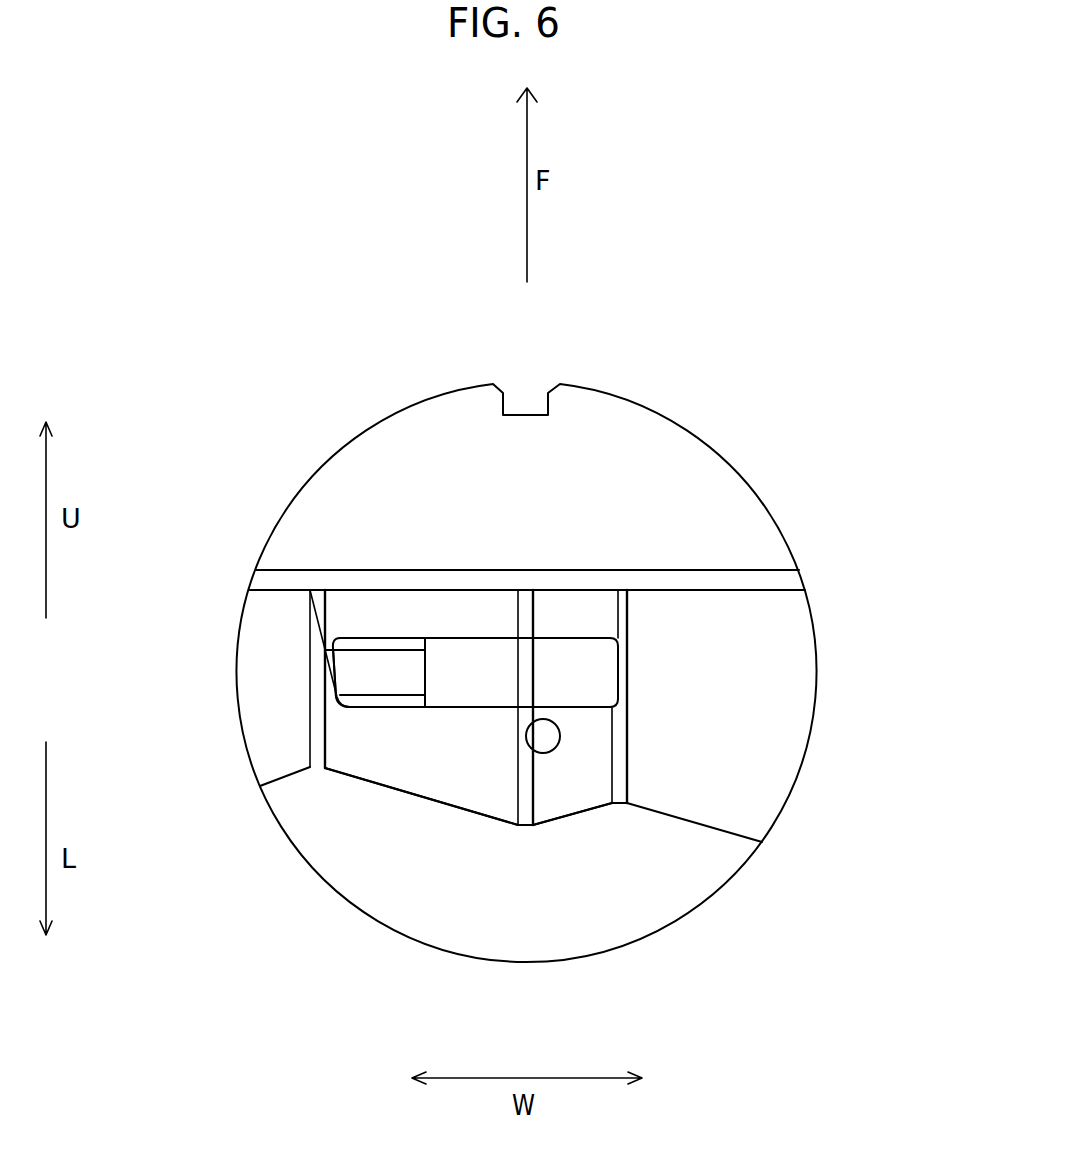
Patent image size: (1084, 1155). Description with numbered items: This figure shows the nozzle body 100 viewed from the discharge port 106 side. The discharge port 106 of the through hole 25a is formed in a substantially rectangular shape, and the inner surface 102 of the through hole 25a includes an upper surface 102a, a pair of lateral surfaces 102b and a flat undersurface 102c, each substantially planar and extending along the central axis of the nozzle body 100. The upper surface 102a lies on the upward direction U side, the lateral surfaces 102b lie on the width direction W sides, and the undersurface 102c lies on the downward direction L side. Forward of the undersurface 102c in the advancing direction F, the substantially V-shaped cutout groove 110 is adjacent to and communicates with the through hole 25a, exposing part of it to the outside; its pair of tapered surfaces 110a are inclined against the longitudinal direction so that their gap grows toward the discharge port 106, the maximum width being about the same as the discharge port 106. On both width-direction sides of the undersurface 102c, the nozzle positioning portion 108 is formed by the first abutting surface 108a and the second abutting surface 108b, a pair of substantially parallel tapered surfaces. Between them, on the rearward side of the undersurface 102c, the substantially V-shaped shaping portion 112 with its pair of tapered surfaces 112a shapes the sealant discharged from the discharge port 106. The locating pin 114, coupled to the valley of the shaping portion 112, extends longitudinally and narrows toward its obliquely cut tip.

The nozzle body 100 is at (199, 294).
The inner surface 102 is at (425, 697).
The upper surface 102a is at (571, 641).
The lateral surfaces 102b is at (426, 673).
The undersurface 102c is at (483, 704).
The through hole 25a is at (513, 668).
The discharge port 106 is at (511, 706).
The nozzle positioning portion 108 is at (620, 768).
The first abutting surface 108a is at (313, 727).
The second abutting surface 108b is at (620, 740).
The cutout groove 110 is at (603, 622).
The tapered surfaces 110a is at (427, 613).
The shaping portion 112 is at (598, 777).
The tapered surfaces 112a is at (575, 790).
The locating pin 114 is at (543, 738).